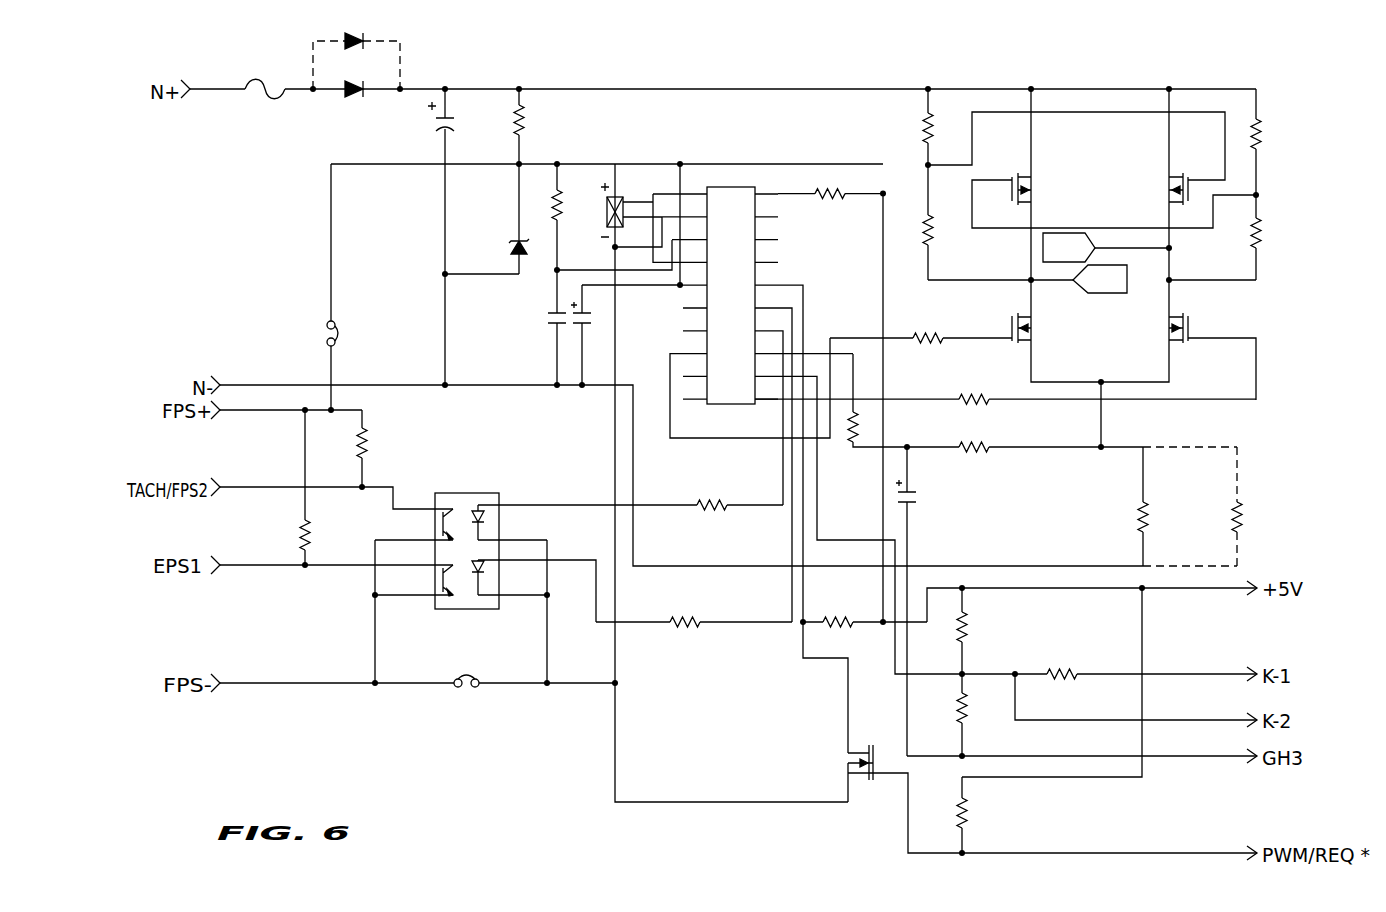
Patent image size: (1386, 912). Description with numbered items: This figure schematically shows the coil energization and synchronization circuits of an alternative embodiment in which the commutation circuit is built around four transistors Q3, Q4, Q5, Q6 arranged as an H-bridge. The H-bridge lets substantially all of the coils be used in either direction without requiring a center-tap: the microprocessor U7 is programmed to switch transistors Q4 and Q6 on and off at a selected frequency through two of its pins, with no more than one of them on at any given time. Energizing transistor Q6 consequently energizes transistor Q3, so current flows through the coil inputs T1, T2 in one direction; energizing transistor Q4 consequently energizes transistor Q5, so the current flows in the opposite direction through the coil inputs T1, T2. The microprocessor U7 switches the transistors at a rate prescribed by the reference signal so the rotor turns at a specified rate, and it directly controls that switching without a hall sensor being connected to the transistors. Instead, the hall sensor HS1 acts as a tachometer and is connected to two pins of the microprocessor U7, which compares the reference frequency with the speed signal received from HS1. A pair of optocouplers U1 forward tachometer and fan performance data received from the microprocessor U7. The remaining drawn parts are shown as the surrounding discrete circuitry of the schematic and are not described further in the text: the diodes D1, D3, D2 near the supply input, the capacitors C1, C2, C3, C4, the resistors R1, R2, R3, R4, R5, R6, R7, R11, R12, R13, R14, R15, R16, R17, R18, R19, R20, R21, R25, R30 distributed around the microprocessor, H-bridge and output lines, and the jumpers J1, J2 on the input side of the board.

The diode D1 is at (358, 78).
The diode (optional, dashed) D3 is at (356, 49).
The zener diode D2 is at (507, 219).
The electrolytic capacitor C1 is at (432, 124).
The capacitor C2 is at (546, 327).
The electrolytic capacitor C3 is at (922, 601).
The electrolytic capacitor C4 is at (594, 335).
The resistor R1 is at (506, 126).
The resistor R2 is at (717, 305).
The resistor R3 is at (1005, 387).
The resistor R4 is at (921, 326).
The resistor R5 is at (1068, 284).
The resistor R6 is at (1273, 142).
The resistor R7 is at (916, 222).
The resistor R11 is at (345, 448).
The resistor (optional) R12 is at (1258, 506).
The resistor R13 is at (285, 487).
The resistor R14 is at (830, 182).
The resistor R15 is at (630, 494).
The resistor R16 is at (694, 609).
The resistor R17 is at (984, 631).
The resistor R18 is at (942, 715).
The resistor R19 is at (943, 815).
The resistor R20 is at (1136, 663).
The resistor R21 is at (865, 609).
The resistor R25 is at (1279, 237).
The resistor R30 is at (1166, 506).
The hall sensor HS1 is at (620, 210).
The microprocessor U7 is at (733, 286).
The optocouplers U1 is at (467, 540).
The jumper J1 is at (318, 332).
The jumper J2 is at (470, 668).
The transistor Q3 is at (1042, 181).
The transistor Q4 is at (1039, 343).
The transistor Q5 is at (1000, 478).
The transistor Q6 is at (1159, 343).
The coil input T1 is at (1100, 279).
The coil input T2 is at (1069, 247).